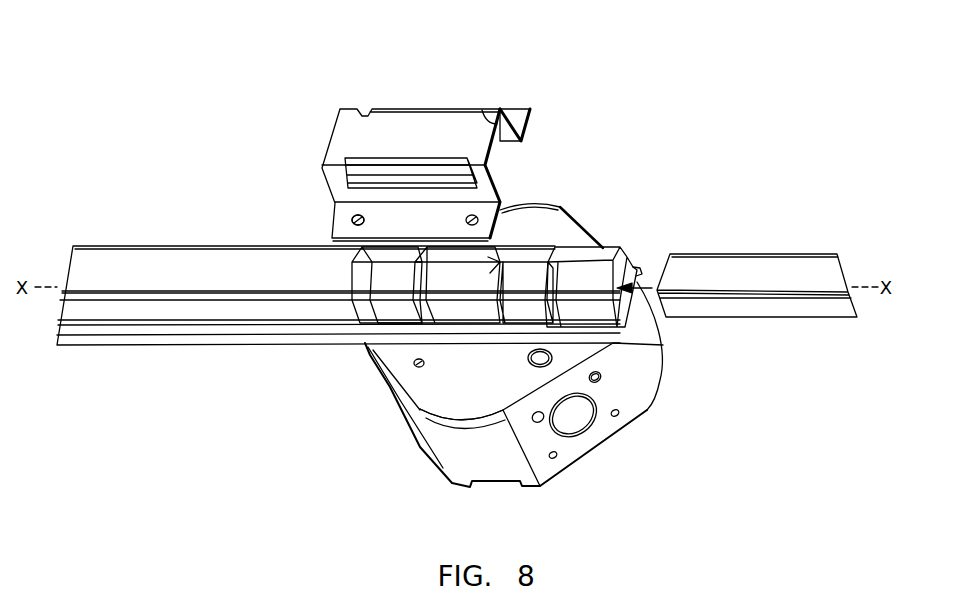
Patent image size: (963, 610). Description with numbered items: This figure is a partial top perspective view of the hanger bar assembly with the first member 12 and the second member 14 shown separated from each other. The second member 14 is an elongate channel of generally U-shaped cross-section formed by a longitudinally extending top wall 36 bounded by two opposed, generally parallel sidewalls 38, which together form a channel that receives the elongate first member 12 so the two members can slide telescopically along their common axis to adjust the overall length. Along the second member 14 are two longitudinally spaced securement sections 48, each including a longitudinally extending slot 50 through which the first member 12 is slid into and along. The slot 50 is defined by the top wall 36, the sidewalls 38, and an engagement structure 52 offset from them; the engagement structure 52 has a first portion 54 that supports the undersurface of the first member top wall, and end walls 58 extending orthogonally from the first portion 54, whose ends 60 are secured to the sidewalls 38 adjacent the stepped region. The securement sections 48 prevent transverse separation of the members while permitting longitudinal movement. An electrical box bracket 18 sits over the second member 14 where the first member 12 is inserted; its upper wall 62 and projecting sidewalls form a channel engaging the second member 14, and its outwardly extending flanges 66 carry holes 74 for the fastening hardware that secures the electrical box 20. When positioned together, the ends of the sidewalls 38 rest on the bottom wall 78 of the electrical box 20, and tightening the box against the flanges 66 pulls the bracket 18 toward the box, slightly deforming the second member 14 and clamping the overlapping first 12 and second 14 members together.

The first member 12 is at (773, 277).
The second member 14 is at (237, 312).
The electrical box bracket 18 is at (385, 137).
The electrical box 20 is at (572, 447).
The top wall 36 is at (583, 273).
The sidewalls 38 is at (636, 280).
The securement section 48 is at (500, 263).
The slot 50 is at (531, 260).
The engagement structure 52 is at (528, 282).
The first portion 54 is at (390, 273).
The end walls 58 is at (385, 305).
The ends 60 is at (410, 321).
The upper wall 62 is at (495, 130).
The flanges 66 is at (533, 113).
The holes 74 is at (355, 216).
The bottom wall 78 is at (448, 393).